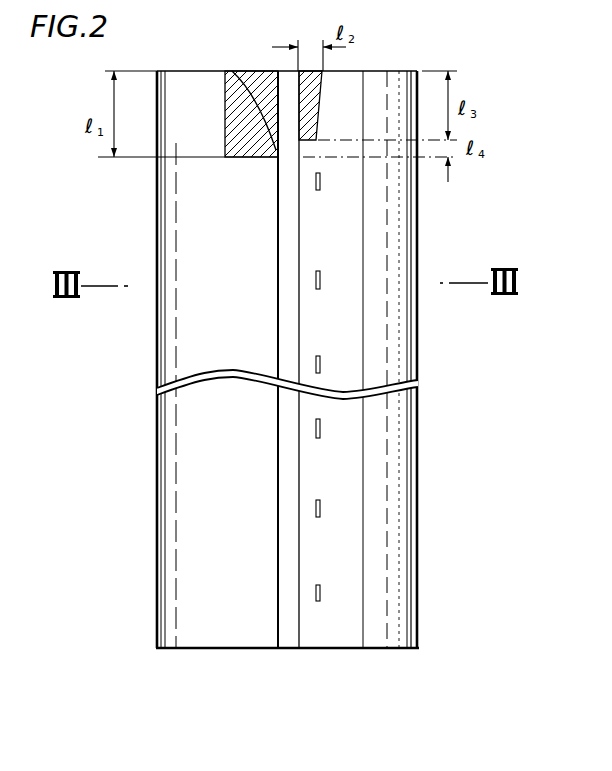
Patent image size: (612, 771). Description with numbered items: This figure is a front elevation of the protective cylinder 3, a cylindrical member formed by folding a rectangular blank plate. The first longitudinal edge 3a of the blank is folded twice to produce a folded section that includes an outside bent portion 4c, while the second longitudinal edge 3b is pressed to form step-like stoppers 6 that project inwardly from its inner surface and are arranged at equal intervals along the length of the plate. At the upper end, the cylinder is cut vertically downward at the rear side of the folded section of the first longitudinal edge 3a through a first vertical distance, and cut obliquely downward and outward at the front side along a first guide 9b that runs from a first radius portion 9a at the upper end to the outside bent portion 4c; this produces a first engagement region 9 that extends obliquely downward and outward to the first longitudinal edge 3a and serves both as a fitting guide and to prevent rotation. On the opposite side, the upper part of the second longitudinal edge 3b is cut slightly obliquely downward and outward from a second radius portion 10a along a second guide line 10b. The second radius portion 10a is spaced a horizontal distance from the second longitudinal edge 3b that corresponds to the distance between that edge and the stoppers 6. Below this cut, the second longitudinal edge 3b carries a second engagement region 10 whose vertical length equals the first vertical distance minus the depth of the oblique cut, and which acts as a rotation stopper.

The protective cylinder 3 is at (269, 351).
The first longitudinal edge 3a is at (278, 318).
The second longitudinal edge 3b is at (302, 251).
The outside bent portion 4c is at (277, 350).
The step-like stoppers 6 is at (322, 181).
The first engagement region 9 is at (253, 87).
The first radius portion 9a is at (235, 72).
The first guide 9b is at (243, 97).
The second engagement region 10 is at (331, 97).
The second radius portion 10a is at (321, 71).
The second guide line 10b is at (314, 104).